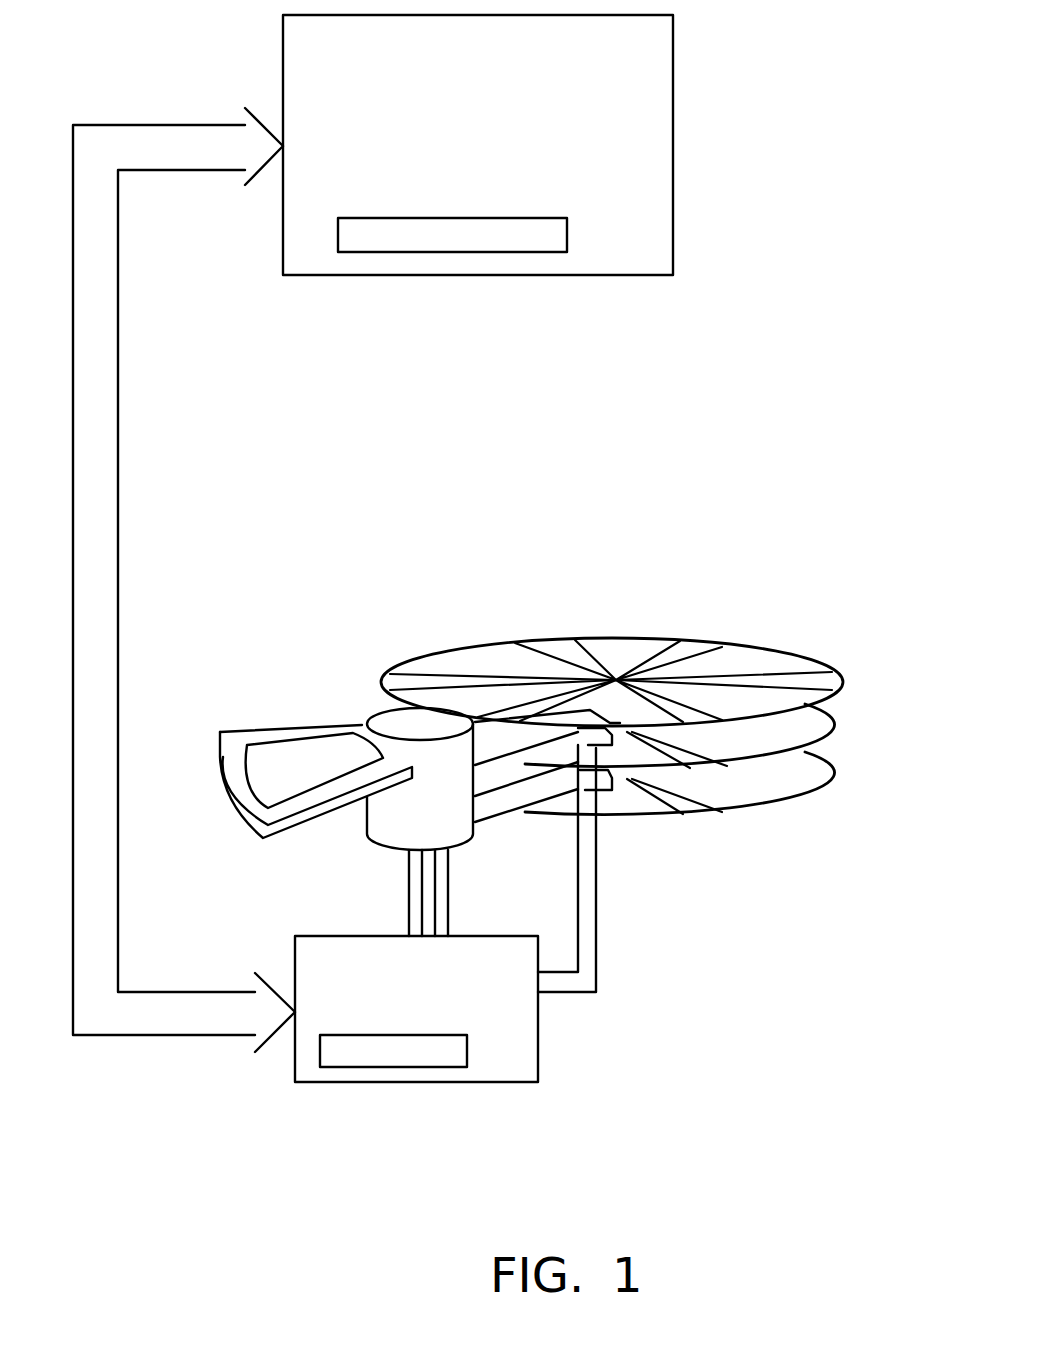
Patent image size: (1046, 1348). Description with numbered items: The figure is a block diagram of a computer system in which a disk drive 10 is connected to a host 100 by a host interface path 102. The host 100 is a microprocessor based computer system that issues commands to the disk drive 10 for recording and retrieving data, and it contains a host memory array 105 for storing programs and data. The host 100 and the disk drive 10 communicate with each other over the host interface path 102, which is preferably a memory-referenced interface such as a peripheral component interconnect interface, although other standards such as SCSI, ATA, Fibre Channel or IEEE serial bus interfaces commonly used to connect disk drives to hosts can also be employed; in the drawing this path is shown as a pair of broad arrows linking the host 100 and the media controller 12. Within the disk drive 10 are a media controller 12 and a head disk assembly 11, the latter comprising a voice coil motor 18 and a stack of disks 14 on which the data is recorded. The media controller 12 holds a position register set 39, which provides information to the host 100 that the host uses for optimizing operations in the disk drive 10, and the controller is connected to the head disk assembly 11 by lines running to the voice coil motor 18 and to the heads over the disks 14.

The host 100 is at (496, 81).
The host memory array 105 is at (533, 219).
The host interface path 102 is at (120, 411).
The disk drive 10 is at (567, 742).
The disks 14 is at (847, 757).
The head disk assembly 11 is at (315, 660).
The voice coil motor 18 is at (297, 724).
The media controller 12 is at (450, 1027).
The position register set 39 is at (372, 1068).